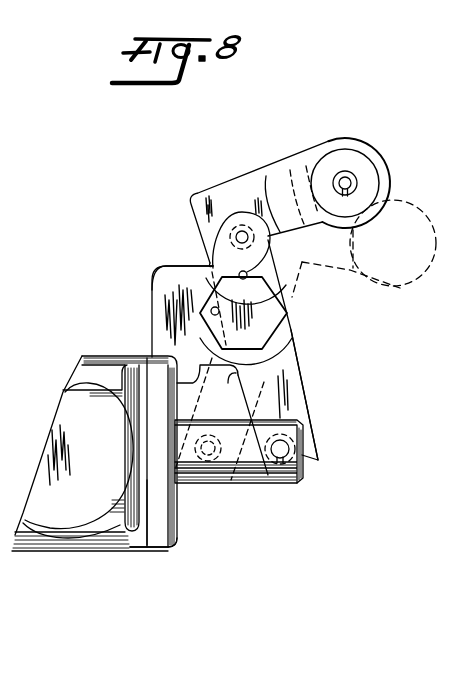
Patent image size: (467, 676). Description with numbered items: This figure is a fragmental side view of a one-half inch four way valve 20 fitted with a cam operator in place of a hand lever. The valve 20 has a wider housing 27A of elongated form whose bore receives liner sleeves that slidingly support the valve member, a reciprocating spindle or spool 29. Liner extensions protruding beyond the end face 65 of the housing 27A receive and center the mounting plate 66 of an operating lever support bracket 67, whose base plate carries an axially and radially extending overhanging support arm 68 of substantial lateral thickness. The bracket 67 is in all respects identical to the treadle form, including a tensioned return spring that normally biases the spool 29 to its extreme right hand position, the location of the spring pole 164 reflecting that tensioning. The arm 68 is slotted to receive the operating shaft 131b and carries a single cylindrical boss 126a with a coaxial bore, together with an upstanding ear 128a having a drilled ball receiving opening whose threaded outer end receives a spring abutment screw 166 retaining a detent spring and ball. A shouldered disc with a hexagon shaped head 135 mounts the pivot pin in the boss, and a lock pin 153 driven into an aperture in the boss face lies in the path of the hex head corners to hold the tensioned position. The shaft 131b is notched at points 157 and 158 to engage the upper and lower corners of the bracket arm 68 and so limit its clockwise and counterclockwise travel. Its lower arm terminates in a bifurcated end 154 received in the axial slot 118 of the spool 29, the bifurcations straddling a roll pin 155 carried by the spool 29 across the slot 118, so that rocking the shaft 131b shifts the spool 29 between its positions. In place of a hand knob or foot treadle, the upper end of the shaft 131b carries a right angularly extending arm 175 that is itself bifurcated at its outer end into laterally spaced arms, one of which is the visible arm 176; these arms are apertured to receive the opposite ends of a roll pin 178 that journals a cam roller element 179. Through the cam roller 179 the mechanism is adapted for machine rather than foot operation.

The valve 20 is at (95, 554).
The housing 27A is at (103, 330).
The spindle 29 is at (233, 488).
The end face of housing 65 is at (148, 503).
The mounting plate 66 is at (150, 549).
The operating lever support bracket 67 is at (150, 306).
The support arm 68 is at (157, 280).
The axial slot 118 is at (266, 488).
The boss 126a is at (276, 285).
The upstanding ear 128a is at (230, 222).
The shaft 131b is at (293, 340).
The hexagon shaped head 135 is at (291, 310).
The lock pin 153 is at (271, 240).
The bifurcated terminal end 154 is at (318, 457).
The roll pin 155 is at (285, 440).
The notch 157 is at (220, 419).
The notch 158 is at (206, 265).
The spring pole 164 is at (219, 310).
The spring abutment screw 166 is at (241, 229).
The right angularly extending arm 175 is at (278, 176).
The laterally spaced arm 176 is at (325, 163).
The roll pin 178 is at (352, 172).
The cam roller element 179 is at (383, 161).